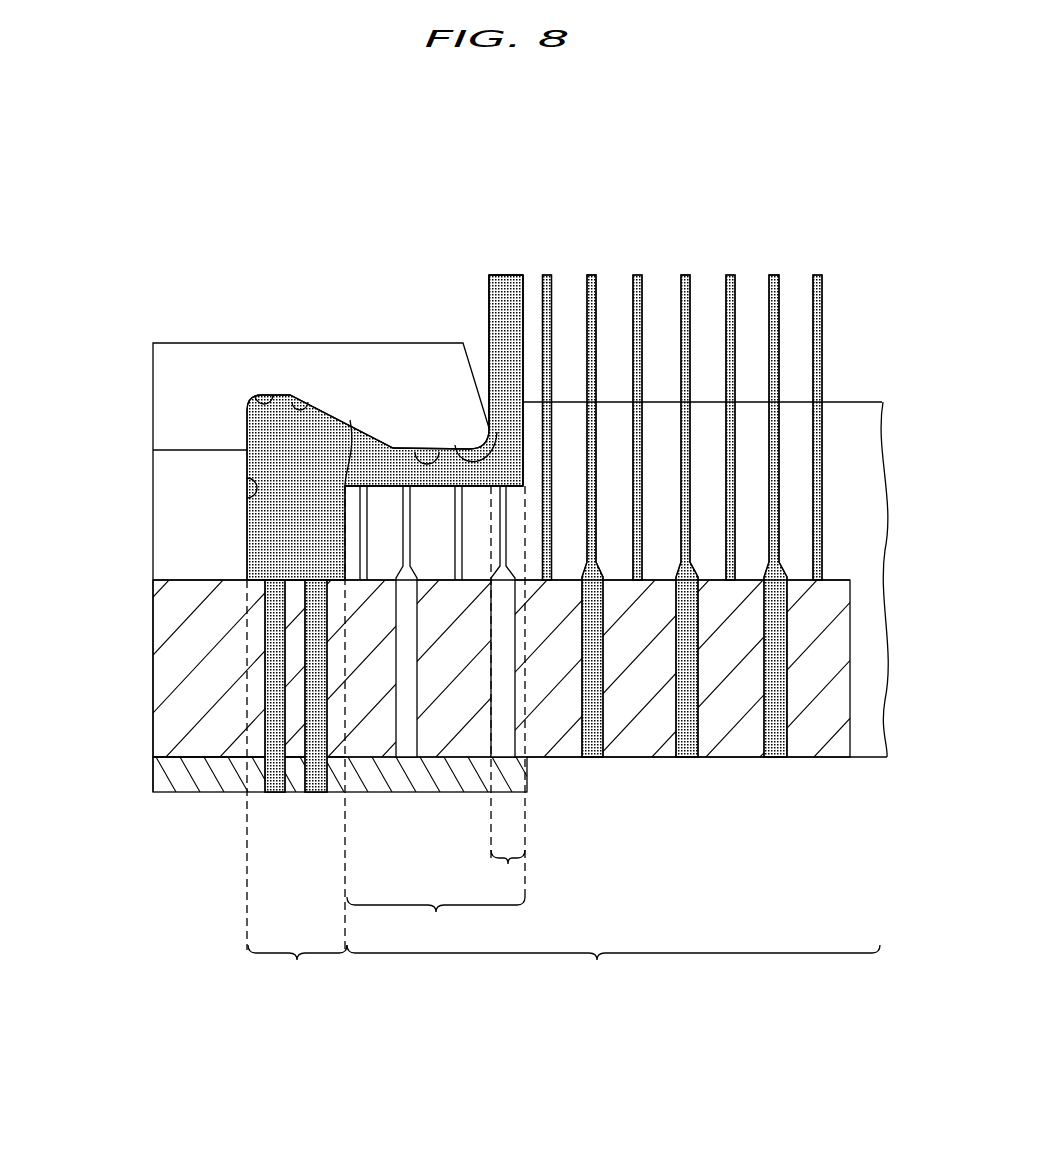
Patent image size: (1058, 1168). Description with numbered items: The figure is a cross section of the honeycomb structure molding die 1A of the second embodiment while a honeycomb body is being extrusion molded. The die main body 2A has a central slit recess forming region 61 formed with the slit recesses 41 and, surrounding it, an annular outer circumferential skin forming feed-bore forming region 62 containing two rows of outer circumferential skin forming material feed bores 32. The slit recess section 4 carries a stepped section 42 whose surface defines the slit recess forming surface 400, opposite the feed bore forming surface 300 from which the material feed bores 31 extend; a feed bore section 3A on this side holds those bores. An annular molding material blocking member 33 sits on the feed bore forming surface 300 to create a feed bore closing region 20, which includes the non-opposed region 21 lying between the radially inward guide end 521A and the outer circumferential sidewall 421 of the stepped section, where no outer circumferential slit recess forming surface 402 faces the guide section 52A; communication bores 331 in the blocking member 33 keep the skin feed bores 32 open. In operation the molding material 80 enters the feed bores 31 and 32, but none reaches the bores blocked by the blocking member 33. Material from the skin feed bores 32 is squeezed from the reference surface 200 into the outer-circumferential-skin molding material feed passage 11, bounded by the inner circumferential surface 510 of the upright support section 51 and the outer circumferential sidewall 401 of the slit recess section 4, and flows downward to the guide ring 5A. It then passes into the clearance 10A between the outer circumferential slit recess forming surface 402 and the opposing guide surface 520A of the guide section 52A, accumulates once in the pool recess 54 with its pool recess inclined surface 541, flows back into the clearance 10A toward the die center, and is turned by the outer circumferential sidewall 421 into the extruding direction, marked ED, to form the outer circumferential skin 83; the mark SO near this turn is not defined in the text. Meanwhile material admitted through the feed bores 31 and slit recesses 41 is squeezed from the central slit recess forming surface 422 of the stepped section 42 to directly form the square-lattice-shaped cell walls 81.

The honeycomb structure molding die 1A is at (141, 345).
The guide ring 5A is at (180, 368).
The guide section 52A is at (212, 367).
The pool recess 54 is at (268, 386).
The pool recess inclined surface 541 is at (304, 394).
The outer circumferential slit recess forming surface 402 is at (350, 420).
The clearance 10A is at (392, 467).
The opposing guide surface 520A is at (413, 450).
The supply opening SO is at (455, 445).
The radially inward guide end 521A is at (488, 338).
The outer circumferential skin 83 is at (493, 273).
The ejection direction ED is at (506, 276).
The outer circumferential sidewall 421 is at (492, 437).
The square-lattice-shaped cell walls 81 is at (550, 322).
The central slit recess forming surface 422 is at (615, 397).
The stepped section 42 is at (657, 413).
The slit recess forming surface 400 is at (710, 393).
The slit recesses 41 is at (733, 430).
The slit recess section 4 is at (849, 422).
The molding material 80 is at (260, 440).
The upright support section 51 is at (188, 472).
The inner circumferential surface 510 is at (250, 500).
The outer-circumferential-skin molding material feed passage 11 is at (280, 523).
The outer circumferential sidewall 401 is at (340, 547).
The reference surface 200 is at (213, 580).
The die main body 2A is at (142, 607).
The substrate 3A is at (205, 677).
The outer circumferential skin forming material feed bores 32 is at (270, 712).
The molding material blocking member 33 is at (193, 775).
The communication bores 331 is at (273, 790).
The material feed bores 31 is at (772, 722).
The feed bore forming surface 300 is at (727, 770).
The non-opposed region 21 is at (508, 870).
The feed bore closing region 20 is at (436, 919).
The outer circumferential skin forming feed-bore forming region 62 is at (297, 965).
The central slit recess forming region 61 is at (613, 965).